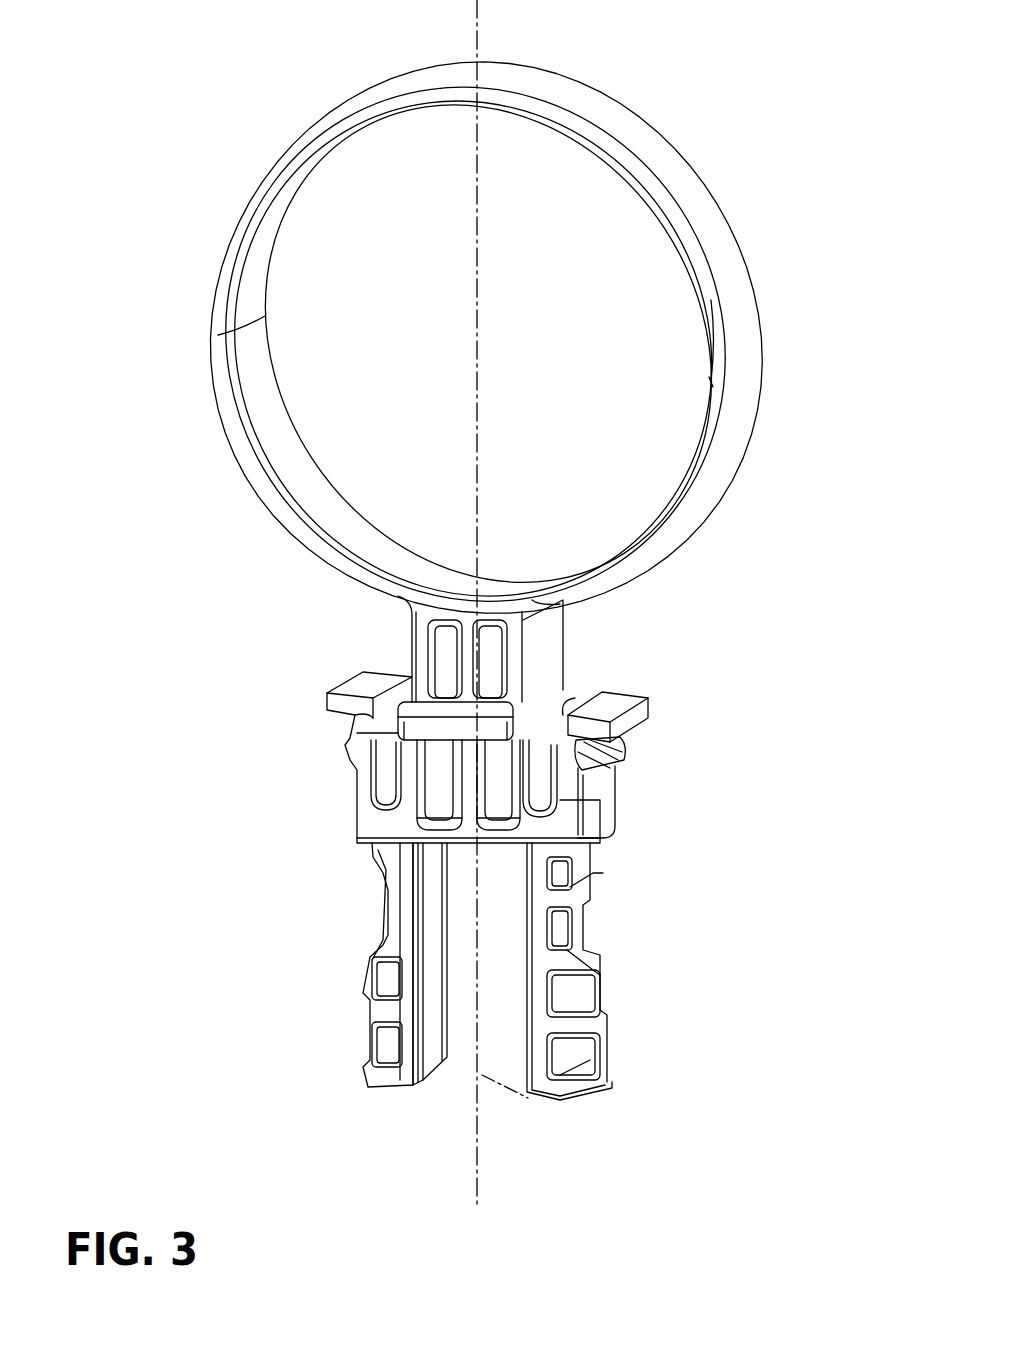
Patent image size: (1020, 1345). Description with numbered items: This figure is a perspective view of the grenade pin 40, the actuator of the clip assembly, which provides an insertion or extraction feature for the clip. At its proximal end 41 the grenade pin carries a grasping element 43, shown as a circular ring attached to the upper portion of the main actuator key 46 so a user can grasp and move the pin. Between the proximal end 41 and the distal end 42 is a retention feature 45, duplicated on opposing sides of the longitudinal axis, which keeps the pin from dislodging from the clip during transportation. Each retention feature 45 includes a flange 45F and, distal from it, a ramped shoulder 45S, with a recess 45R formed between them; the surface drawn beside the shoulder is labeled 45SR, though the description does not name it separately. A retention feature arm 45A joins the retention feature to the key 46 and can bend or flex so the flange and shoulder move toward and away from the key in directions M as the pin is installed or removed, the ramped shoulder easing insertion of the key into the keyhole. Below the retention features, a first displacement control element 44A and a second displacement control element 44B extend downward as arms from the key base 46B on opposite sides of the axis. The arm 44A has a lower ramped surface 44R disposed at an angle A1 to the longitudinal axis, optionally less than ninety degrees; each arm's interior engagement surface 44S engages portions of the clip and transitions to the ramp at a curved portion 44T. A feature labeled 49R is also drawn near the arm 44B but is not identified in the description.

The grenade pin 40 is at (755, 228).
The proximal end 41 is at (634, 72).
The grasping element 43 is at (735, 312).
The distal end 42 is at (541, 1029).
The retention feature 45 is at (685, 785).
The flange 45F is at (643, 708).
The recess 45R is at (625, 747).
The shoulder 45S is at (610, 750).
The clip slanted rib 45SR is at (605, 770).
The retention feature arm 45A is at (597, 802).
The key 46 is at (540, 783).
The key base 46B is at (597, 800).
The interior engagement surface 44S is at (550, 1070).
The curved portion 44T is at (560, 1040).
The first displacement control element 44A is at (558, 1103).
The lower ramped surface 44R is at (580, 1110).
The second displacement control element 44B is at (433, 1080).
The left leg 49R is at (380, 1093).
The angle A1 is at (546, 1110).
The directions M is at (640, 682).